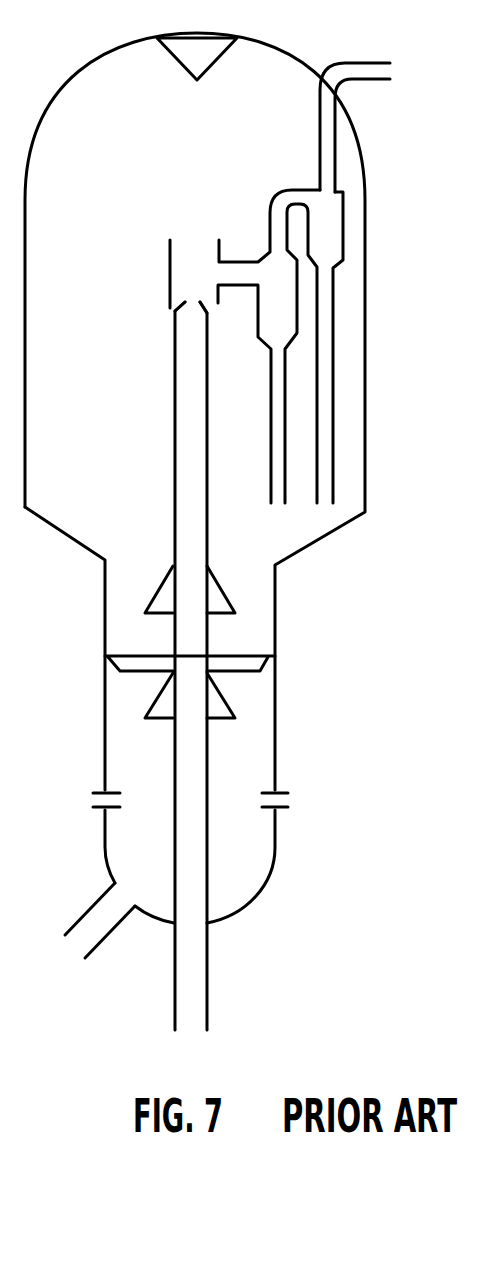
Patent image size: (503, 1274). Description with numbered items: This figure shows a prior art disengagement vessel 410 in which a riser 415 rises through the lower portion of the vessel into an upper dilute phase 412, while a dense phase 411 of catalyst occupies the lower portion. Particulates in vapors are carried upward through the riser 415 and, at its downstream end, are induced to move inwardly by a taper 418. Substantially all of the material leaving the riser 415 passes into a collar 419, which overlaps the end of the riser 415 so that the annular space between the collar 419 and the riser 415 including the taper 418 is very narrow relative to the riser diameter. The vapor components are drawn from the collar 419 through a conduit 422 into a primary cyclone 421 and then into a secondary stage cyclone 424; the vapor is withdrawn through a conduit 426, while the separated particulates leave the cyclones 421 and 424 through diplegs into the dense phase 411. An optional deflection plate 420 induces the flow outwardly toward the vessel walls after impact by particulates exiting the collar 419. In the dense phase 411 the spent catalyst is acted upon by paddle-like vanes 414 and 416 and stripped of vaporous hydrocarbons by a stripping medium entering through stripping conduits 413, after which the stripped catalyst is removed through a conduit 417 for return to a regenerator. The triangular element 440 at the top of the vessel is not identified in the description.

The disengagement vessel 410 is at (367, 377).
The dense phase 411 is at (128, 519).
The dilute phase 412 is at (111, 407).
The stripping conduit 413 is at (98, 812).
The vanes 414 is at (228, 597).
The riser 415 is at (208, 980).
The vanes 416 is at (247, 663).
The conduit 417 is at (92, 907).
The taper 418 is at (175, 310).
The collar 419 is at (170, 258).
The deflection plate 420 is at (170, 305).
The primary cyclone 421 is at (292, 310).
The conduit 422 is at (237, 265).
The secondary stage cyclone 424 is at (347, 229).
The conduit 426 is at (338, 115).
The triangular deflector 440 is at (180, 62).